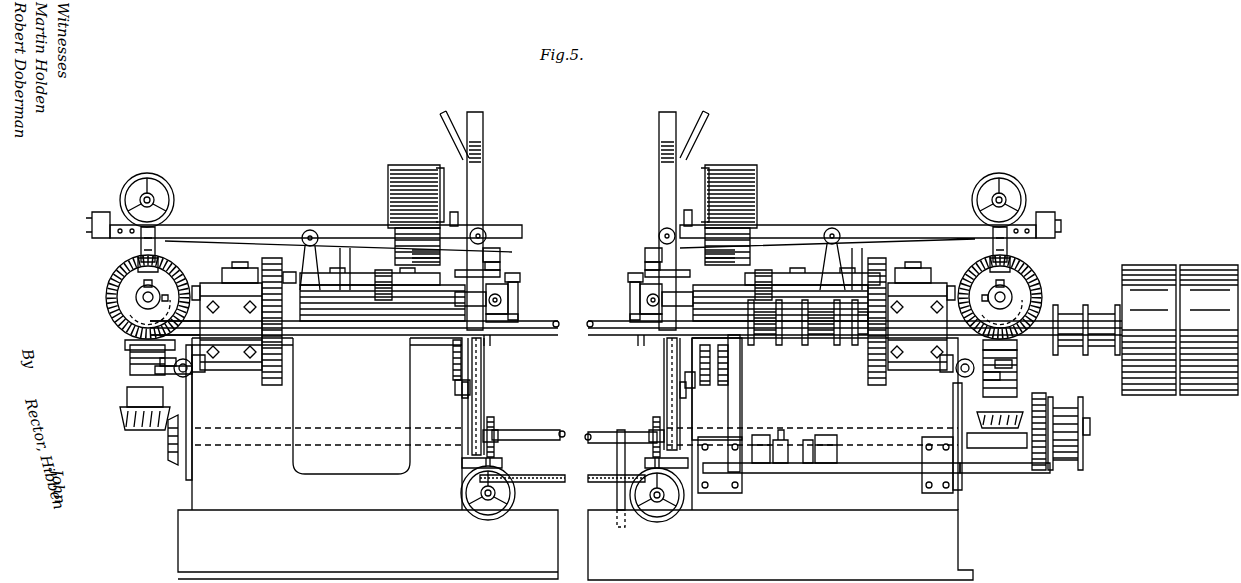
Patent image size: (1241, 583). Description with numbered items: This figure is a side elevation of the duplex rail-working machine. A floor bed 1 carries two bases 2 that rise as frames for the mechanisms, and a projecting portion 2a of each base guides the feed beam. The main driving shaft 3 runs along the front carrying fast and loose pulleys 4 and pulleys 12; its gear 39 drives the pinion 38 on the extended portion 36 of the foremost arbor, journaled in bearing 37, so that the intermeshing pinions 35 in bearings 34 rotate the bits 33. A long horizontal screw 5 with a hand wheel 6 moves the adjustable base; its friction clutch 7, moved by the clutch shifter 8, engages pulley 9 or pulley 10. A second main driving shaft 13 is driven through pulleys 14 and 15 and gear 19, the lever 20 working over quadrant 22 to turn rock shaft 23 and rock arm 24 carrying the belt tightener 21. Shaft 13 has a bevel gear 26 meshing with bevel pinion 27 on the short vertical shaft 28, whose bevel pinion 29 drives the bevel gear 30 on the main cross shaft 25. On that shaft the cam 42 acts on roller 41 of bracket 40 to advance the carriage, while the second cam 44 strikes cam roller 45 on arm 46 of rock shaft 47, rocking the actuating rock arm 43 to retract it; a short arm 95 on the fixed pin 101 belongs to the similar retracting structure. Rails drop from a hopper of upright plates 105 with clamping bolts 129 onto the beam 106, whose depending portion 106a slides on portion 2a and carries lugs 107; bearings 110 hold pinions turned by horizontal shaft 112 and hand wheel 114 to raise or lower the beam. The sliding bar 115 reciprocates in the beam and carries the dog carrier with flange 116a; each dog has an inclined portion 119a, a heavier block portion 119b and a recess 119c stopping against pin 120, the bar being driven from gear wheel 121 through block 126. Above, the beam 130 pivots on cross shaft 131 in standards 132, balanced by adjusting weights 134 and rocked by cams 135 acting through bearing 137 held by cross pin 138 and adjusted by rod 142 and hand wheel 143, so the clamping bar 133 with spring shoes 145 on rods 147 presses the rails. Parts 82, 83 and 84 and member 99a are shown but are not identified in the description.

The floor bed 1 is at (575, 545).
The bases 2 is at (575, 424).
The projecting portion of base 2a is at (470, 390).
The main driving shaft 3 is at (556, 338).
The fast and loose pulleys 4 is at (1192, 265).
The long horizontal screw 5 is at (592, 478).
The hand wheel 6 is at (618, 430).
The friction clutch 7 is at (783, 437).
The clutch shifter 8 is at (792, 475).
The pulley 9 is at (758, 435).
The pulley 10 is at (822, 436).
The pulleys 12 is at (762, 346).
The second main driving shaft 13 is at (562, 431).
The pulley 14 is at (1072, 348).
The pulley 15 is at (1069, 403).
The gear 19 is at (1040, 402).
The lever 20 is at (742, 412).
The belt tightener 21 is at (1082, 425).
The quadrant 22 is at (718, 356).
The rock shaft 23 is at (1000, 474).
The rock arm 24 is at (1079, 460).
The main cross shaft 25 is at (106, 297).
The bevel gear 26 is at (183, 424).
The bevel pinion 27 is at (133, 405).
The short vertical shaft 28 is at (150, 377).
The bevel pinion 29 is at (116, 322).
The bevel gear 30 is at (126, 265).
The bits 33 is at (492, 273).
The bearings 34 is at (386, 280).
The intermeshing pinions 35 is at (383, 289).
The extended portion of arbor 36 is at (283, 274).
The bearing 37 is at (226, 270).
The pinion 38 is at (240, 266).
The gear 39 is at (272, 387).
The bracket 40 is at (573, 326).
The roller 41 is at (574, 293).
The cam 42 is at (204, 280).
The actuating rock arm 43 is at (200, 362).
The second cam 44 is at (140, 344).
The cam roller 45 is at (148, 362).
The arm 46 is at (178, 375).
The rock shaft 47 is at (190, 374).
The hatched part 82 is at (572, 236).
The box 83 is at (388, 189).
The strip 84 is at (441, 177).
The short arm 95 is at (426, 254).
The rod 99a is at (482, 363).
The fixed pin 101 is at (493, 421).
The upright plates 105 is at (441, 125).
The beam 106 is at (484, 156).
The depending portion of beam 106a is at (468, 411).
The lugs 107 is at (497, 432).
The bearings 110 is at (503, 463).
The horizontal shaft 112 is at (477, 514).
The hand wheel 114 is at (503, 515).
The sliding bar 115 is at (492, 322).
The flange 116a is at (468, 299).
The inclined portion of dog 119a is at (512, 278).
The main portion of dog 119b is at (516, 308).
The recess 119c is at (488, 338).
The pin 120 is at (512, 297).
The gear wheel 121 is at (453, 360).
The block 126 is at (455, 388).
The clamping bolts 129 is at (453, 212).
The beam 130 is at (245, 224).
The cross shaft 131 is at (309, 229).
The standards 132 is at (320, 257).
The clamping bar 133 is at (491, 255).
The adjusting weights 134 is at (100, 213).
The cams 135 is at (120, 283).
The bearing 137 is at (158, 243).
The cross pin 138 is at (160, 265).
The shaft 142 is at (155, 200).
The hand wheel 143 is at (172, 189).
The spring pressed shoes 145 is at (501, 263).
The rod 147 is at (486, 237).